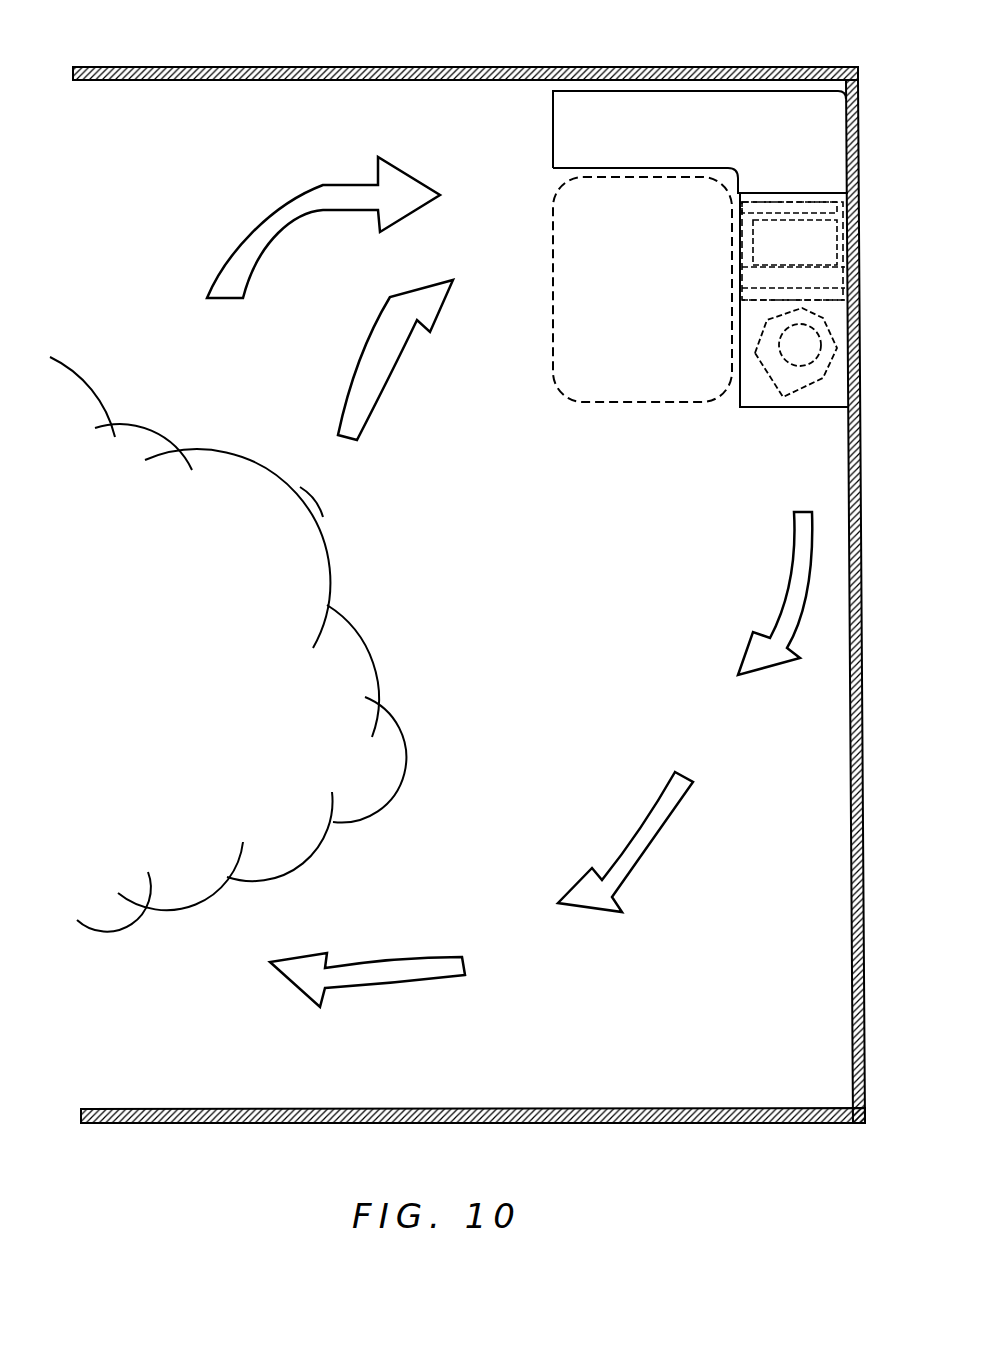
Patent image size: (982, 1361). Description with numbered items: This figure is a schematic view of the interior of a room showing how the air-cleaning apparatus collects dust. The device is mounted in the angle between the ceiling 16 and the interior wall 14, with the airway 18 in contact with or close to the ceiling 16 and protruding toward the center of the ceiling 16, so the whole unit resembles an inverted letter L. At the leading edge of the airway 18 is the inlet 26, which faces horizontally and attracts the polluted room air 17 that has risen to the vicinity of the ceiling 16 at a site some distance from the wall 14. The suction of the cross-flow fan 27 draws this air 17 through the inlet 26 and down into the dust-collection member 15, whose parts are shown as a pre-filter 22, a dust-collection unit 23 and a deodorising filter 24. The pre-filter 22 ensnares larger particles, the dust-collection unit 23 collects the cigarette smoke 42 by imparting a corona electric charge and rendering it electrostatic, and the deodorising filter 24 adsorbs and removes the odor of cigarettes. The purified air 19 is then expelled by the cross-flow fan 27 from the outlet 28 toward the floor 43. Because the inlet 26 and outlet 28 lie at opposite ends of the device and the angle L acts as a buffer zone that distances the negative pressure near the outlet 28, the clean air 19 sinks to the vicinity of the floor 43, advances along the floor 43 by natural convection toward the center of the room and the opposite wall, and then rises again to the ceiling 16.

The interior wall 14 is at (853, 982).
The dust-collection member 15 is at (733, 241).
The ceiling 16 is at (478, 66).
The room air 17 is at (265, 247).
The airway 18 is at (668, 97).
The purified air 19 is at (792, 583).
The pre-filter 22 is at (740, 202).
The dust-collection unit 23 is at (753, 240).
The deodorising filter 24 is at (758, 279).
The inlet 26 is at (552, 130).
The cross-flow fan 27 is at (795, 357).
The outlet 28 is at (770, 407).
The cigarette smoke 42 is at (338, 548).
The floor 43 is at (502, 1108).
The angle of the L-shaped device L is at (567, 390).